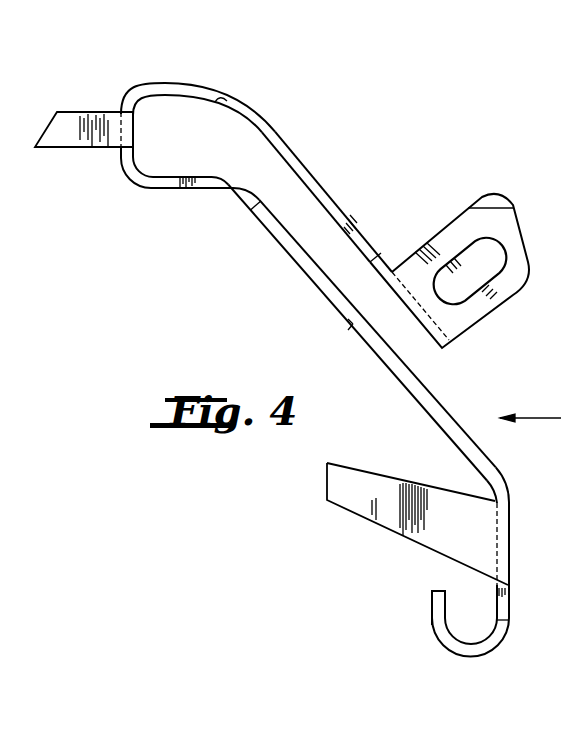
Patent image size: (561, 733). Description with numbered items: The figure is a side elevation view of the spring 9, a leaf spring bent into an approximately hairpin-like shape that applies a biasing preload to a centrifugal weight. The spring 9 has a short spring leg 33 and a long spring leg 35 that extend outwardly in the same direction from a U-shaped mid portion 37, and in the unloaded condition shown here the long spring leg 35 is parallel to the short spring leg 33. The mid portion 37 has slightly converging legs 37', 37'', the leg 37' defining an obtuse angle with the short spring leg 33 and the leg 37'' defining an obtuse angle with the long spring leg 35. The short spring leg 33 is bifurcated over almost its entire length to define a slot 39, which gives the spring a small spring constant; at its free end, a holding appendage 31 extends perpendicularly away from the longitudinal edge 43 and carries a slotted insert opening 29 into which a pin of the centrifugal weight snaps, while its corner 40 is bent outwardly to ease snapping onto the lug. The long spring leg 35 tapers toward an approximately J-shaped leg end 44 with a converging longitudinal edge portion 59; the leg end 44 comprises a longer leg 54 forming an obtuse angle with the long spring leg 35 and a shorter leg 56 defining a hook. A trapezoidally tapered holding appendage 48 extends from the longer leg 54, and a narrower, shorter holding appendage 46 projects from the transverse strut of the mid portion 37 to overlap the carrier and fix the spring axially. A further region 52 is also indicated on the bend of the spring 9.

The spring 9 is at (148, 79).
The slotted insert opening 29 is at (492, 273).
The holding appendage 31 is at (447, 233).
The short spring leg 33 is at (298, 157).
The long spring leg 35 is at (312, 280).
The U-shaped mid portion 37 is at (154, 136).
The leg of mid portion 37' is at (204, 71).
The leg of mid portion 37'' is at (205, 212).
The slot 39 is at (230, 99).
The corner of holding appendage 40 is at (500, 197).
The longitudinal edge 43 is at (329, 203).
The J-shaped leg end 44 is at (503, 608).
The holding appendage 46 is at (78, 112).
The holding appendage 48 is at (366, 510).
The lower bend of C portion 52 is at (130, 184).
The longer leg of leg end 54 is at (510, 557).
The shorter leg of leg end 56 is at (433, 633).
The converging longitudinal edge portion 59 is at (352, 324).